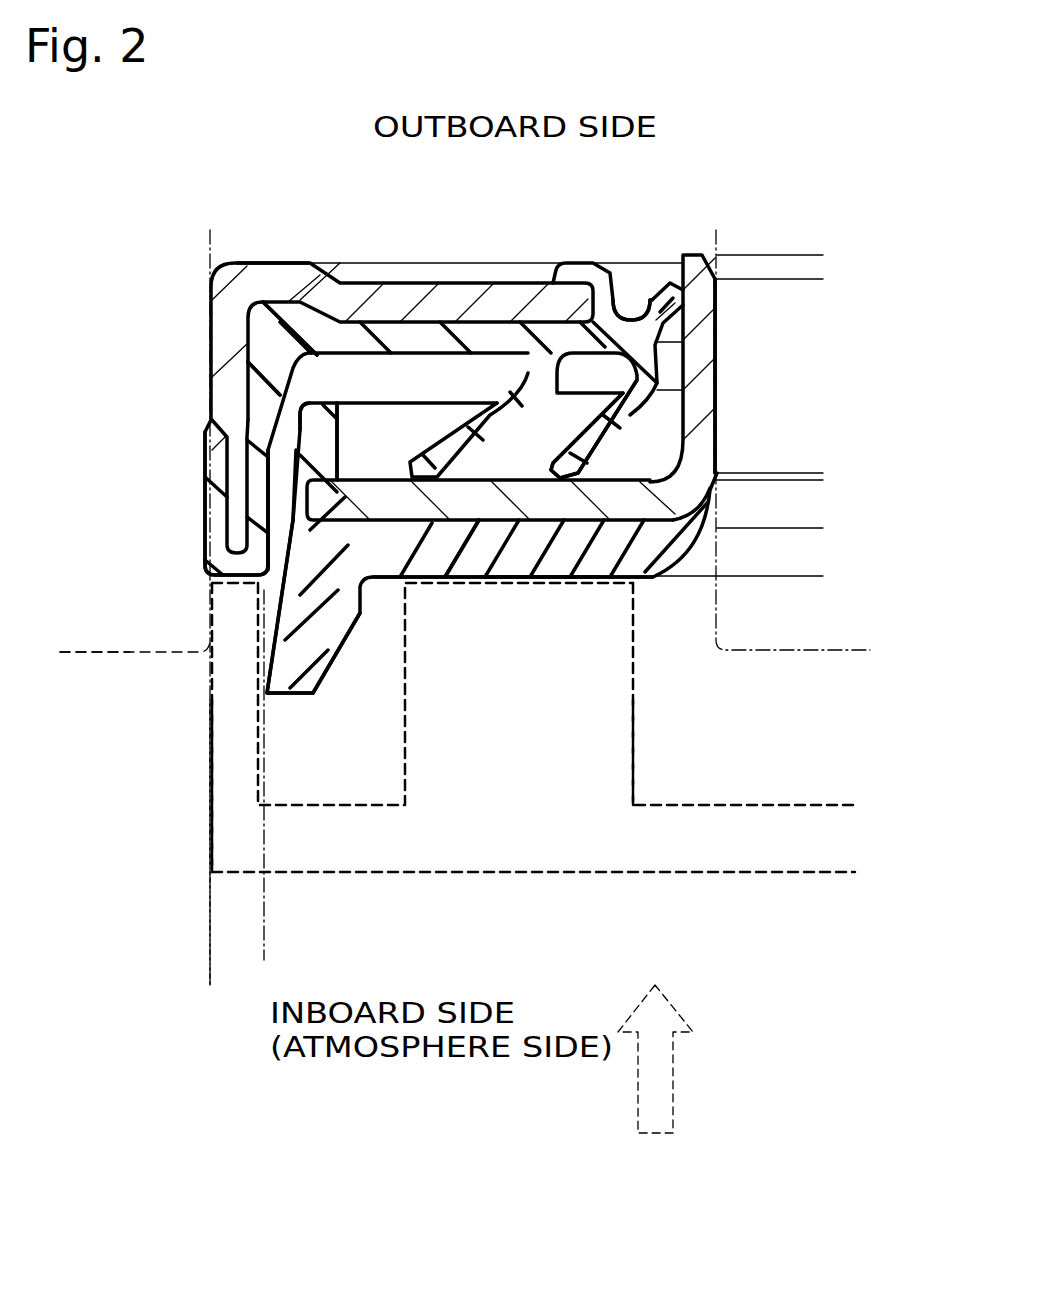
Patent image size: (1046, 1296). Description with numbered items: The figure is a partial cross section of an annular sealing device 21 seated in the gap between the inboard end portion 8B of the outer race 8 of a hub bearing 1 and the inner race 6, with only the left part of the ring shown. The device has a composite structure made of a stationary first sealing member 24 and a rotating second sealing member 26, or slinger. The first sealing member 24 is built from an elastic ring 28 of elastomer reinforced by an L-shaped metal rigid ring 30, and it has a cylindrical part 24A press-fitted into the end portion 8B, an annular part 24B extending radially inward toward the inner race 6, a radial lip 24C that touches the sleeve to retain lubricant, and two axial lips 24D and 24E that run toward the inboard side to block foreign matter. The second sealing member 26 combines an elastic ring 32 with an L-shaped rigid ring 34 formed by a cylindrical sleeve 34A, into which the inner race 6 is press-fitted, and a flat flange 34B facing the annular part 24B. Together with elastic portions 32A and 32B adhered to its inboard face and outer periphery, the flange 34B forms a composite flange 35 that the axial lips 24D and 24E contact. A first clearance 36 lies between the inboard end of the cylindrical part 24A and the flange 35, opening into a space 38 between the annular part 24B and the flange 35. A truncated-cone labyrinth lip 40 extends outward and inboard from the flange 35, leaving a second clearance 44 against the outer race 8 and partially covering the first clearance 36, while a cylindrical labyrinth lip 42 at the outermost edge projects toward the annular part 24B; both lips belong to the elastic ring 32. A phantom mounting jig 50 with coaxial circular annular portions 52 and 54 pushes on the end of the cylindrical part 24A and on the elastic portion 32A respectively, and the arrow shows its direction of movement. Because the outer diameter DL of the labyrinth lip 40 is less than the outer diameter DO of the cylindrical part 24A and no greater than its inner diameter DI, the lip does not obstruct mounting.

The hub bearing 1 is at (190, 740).
The inner race 6 is at (740, 653).
The outer race 8 is at (105, 653).
The end portion 8B is at (77, 653).
The sealing device 21 is at (343, 714).
The first sealing member 24 is at (268, 233).
The cylindrical part 24A is at (227, 347).
The annular part 24B is at (362, 290).
The radial lip 24C is at (652, 317).
The axial lip 24D is at (493, 428).
The axial lip 24E is at (600, 443).
The second sealing member 26 is at (650, 627).
The elastic ring 28 is at (562, 272).
The rigid ring 30 is at (287, 277).
The elastic ring 32 is at (502, 580).
The elastic portion 32A is at (537, 583).
The elastic portion 32B is at (260, 498).
The rigid ring 34 is at (713, 358).
The sleeve 34A is at (713, 338).
The flange 34B is at (573, 507).
The flange 35 is at (463, 583).
The first clearance 36 is at (277, 488).
The space 38 is at (327, 382).
The labyrinth lip 40 is at (330, 670).
The labyrinth lip 42 is at (293, 413).
The second clearance 44 is at (233, 645).
The mounting jig 50 is at (318, 877).
The circular annular portion 52 is at (215, 767).
The circular annular portion 54 is at (630, 717).
The inner diameter DI is at (265, 938).
The outer diameter DL is at (265, 957).
The outer diameter DO is at (207, 977).